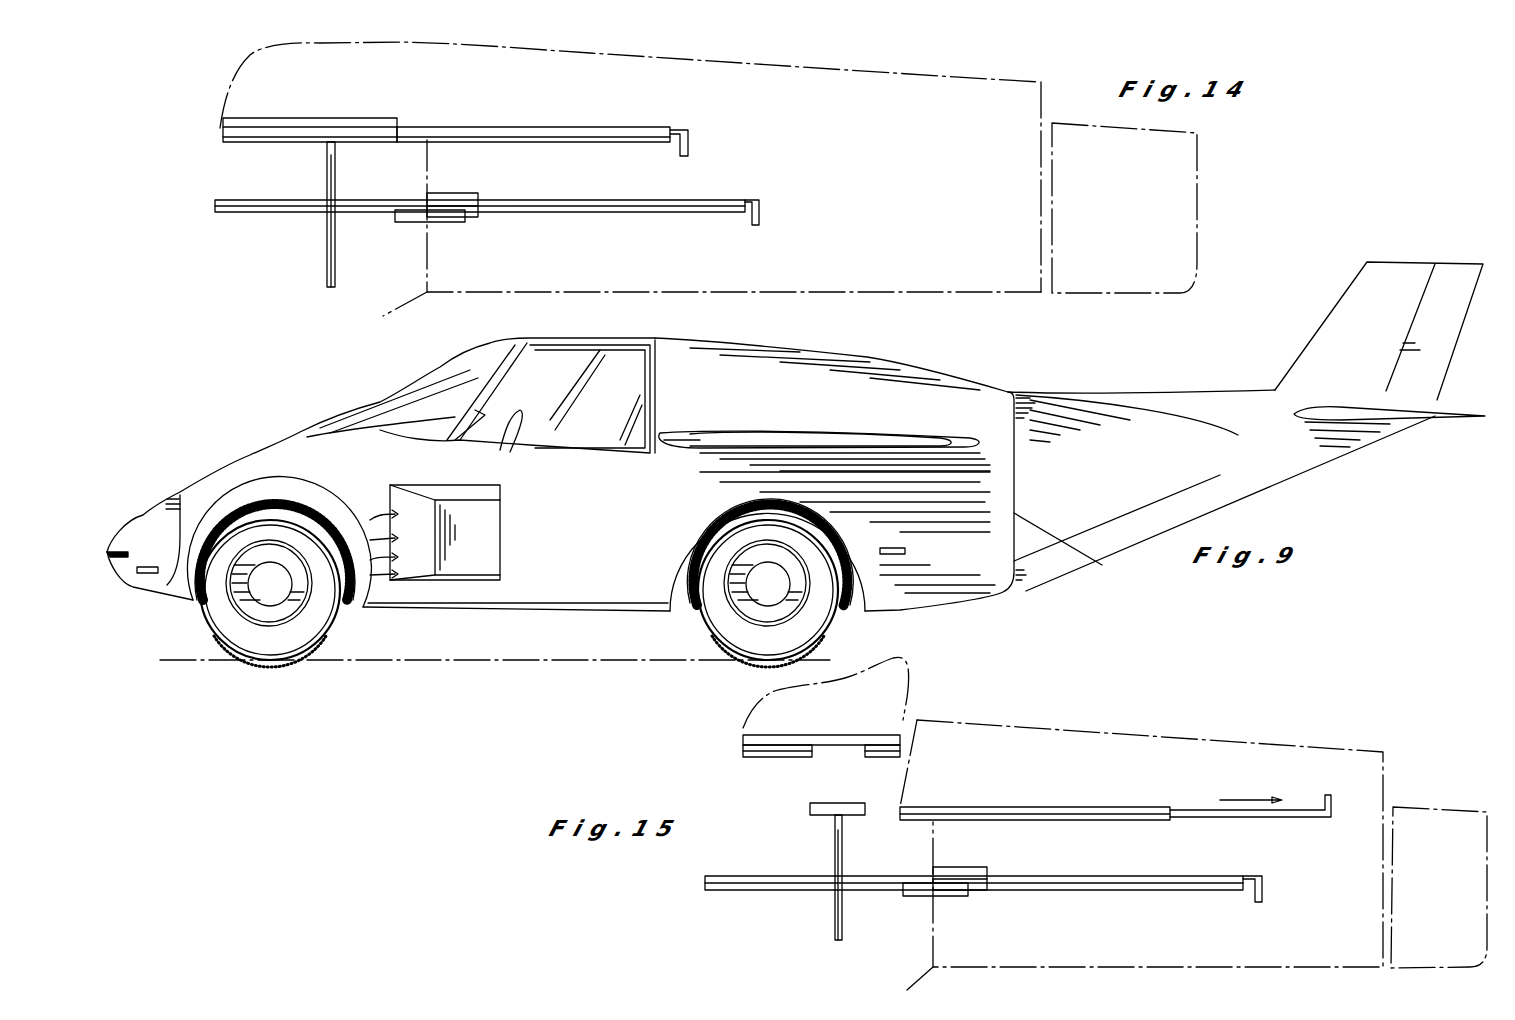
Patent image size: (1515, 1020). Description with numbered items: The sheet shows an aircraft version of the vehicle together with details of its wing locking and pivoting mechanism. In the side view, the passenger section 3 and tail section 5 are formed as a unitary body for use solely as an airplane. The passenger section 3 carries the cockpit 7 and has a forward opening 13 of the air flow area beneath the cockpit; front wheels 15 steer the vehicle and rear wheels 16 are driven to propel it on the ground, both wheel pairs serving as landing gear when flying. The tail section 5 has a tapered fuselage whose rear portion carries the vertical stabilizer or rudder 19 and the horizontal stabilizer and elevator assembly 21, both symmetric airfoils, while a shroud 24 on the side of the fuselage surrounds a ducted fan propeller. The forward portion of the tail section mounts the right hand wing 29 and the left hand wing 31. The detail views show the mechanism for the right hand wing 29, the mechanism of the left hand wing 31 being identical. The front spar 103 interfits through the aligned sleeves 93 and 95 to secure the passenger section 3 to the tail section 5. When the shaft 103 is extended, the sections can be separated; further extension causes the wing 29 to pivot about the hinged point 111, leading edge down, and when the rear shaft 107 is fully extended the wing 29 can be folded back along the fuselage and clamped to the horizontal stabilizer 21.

In FIG. 14, the passenger section 3 is at (242, 87).
In FIG. 9, the passenger section 3 is at (257, 460).
In FIG. 15, the passenger section 3 is at (912, 698).
In FIG. 14, the tail section 5 is at (371, 272).
In FIG. 9, the tail section 5 is at (1172, 387).
In FIG. 15, the tail section 5 is at (878, 942).
In FIG. 9, the cockpit 7 is at (582, 350).
In FIG. 9, the forward opening 13 is at (129, 597).
In FIG. 9, the front wheels 15 is at (268, 652).
In FIG. 9, the rear wheels 16 is at (742, 650).
In FIG. 9, the vertical stabilizer or rudder 19 is at (1402, 275).
In FIG. 9, the horizontal stabilizer and elevator assembly 21 is at (1378, 418).
In FIG. 9, the shroud 24 is at (1102, 565).
In FIG. 14, the right hand wing 29 is at (1025, 285).
In FIG. 15, the right hand wing 29 is at (1410, 810).
In FIG. 9, the left hand wing 31 is at (780, 437).
In FIG. 14, the sleeve 93 is at (320, 130).
In FIG. 15, the sleeve 93 is at (820, 818).
In FIG. 14, the sleeve 95 is at (378, 142).
In FIG. 15, the sleeve 95 is at (872, 757).
In FIG. 14, the front spar 103 is at (603, 122).
In FIG. 15, the front spar 103 is at (1196, 810).
In FIG. 14, the rear shaft 107 is at (548, 208).
In FIG. 15, the rear shaft 107 is at (1105, 890).
In FIG. 14, the hinged point 111 is at (480, 195).
In FIG. 15, the hinged point 111 is at (970, 867).